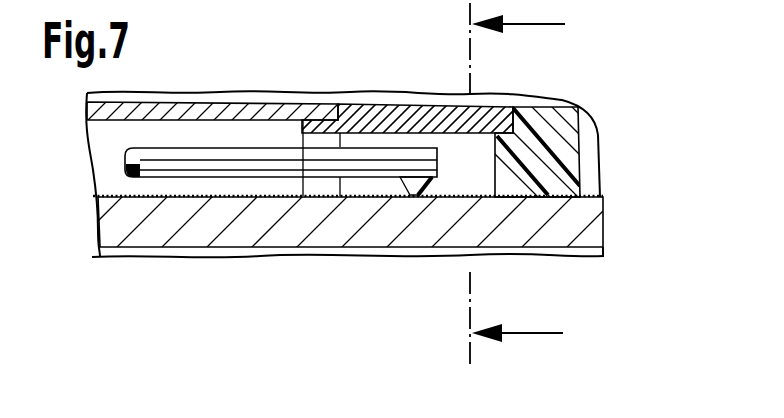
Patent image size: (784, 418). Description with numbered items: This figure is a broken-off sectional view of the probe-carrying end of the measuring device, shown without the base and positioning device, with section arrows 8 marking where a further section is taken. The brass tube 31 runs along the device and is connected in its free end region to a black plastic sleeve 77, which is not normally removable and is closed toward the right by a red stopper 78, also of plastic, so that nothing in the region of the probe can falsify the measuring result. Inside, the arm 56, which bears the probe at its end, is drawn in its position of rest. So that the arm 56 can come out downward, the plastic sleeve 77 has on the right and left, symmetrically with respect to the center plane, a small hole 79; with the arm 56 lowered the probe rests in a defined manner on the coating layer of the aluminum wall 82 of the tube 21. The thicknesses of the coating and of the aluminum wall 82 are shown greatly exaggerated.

The section line 8- 8 is at (505, 184).
The tube 21 is at (604, 218).
The brass tube 31 is at (161, 200).
The arm 56 is at (221, 157).
The plastic sleeve 77 is at (401, 105).
The stopper 78 is at (550, 175).
The small hole 79 is at (391, 203).
The aluminum wall 82 is at (276, 236).